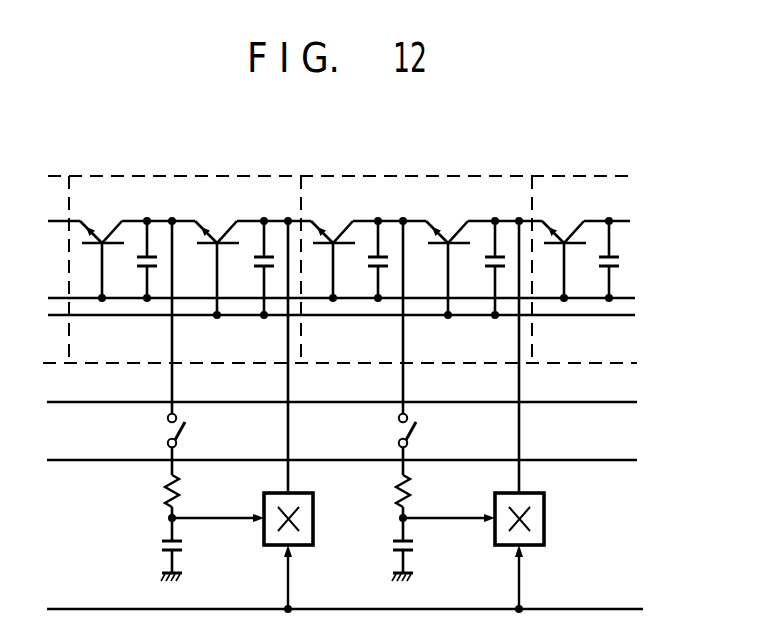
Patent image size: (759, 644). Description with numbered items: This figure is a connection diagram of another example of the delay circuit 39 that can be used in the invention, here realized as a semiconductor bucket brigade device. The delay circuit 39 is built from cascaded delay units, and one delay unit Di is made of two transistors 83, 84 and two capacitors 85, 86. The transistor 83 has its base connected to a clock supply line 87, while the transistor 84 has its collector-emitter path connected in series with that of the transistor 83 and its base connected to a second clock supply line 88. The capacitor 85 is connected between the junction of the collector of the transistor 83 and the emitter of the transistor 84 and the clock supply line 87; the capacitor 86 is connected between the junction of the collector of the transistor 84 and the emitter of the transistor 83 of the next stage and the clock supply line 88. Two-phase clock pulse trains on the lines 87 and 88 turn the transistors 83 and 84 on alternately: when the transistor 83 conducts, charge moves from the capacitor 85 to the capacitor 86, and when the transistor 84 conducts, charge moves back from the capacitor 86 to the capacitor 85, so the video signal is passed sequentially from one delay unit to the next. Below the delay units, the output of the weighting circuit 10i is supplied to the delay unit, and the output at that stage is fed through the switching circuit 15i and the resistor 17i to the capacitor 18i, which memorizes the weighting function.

The delay circuit 39 is at (153, 160).
The delay unit Di is at (213, 175).
The transistor 83 is at (89, 246).
The transistor 84 is at (207, 246).
The capacitor 85 is at (138, 268).
The capacitor 86 is at (258, 268).
The clock supply line 87 is at (115, 300).
The clock supply line 88 is at (164, 316).
The switching circuit 15i is at (183, 427).
The resistor 17i is at (180, 492).
The capacitor 18i is at (184, 543).
The weighting circuit 10i is at (313, 520).